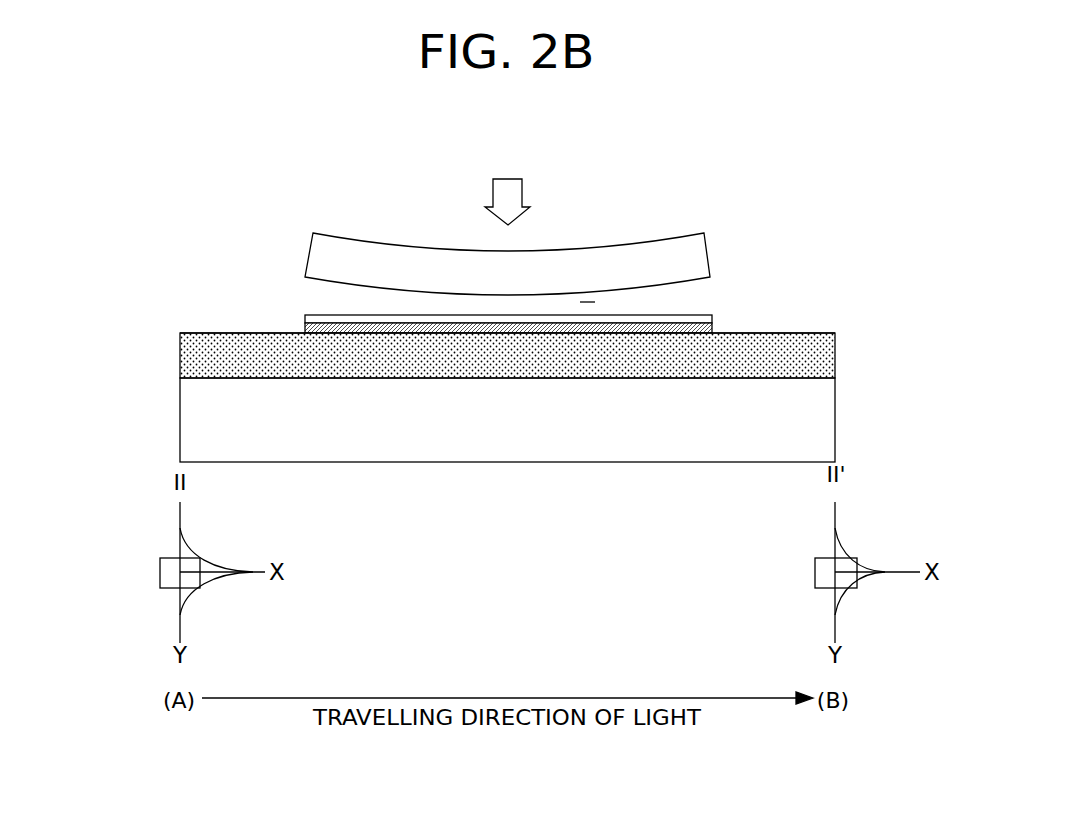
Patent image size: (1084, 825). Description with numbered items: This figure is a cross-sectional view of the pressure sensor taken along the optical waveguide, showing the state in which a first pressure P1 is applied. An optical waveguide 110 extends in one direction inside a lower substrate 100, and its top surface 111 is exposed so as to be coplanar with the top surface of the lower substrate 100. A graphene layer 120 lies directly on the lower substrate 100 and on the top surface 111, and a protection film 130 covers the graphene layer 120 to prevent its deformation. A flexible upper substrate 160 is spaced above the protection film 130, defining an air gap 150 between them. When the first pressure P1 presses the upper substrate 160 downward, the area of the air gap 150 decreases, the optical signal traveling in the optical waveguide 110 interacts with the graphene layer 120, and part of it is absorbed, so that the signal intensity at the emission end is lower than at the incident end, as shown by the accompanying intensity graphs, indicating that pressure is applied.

The first pressure P1 is at (508, 187).
The upper substrate 160 is at (693, 258).
The air gap 150 is at (588, 302).
The protection film 130 is at (700, 318).
The graphene layer 120 is at (700, 328).
The optical waveguide 110 is at (823, 352).
The top surface of the optical waveguide 111 is at (818, 333).
The lower substrate 100 is at (823, 418).